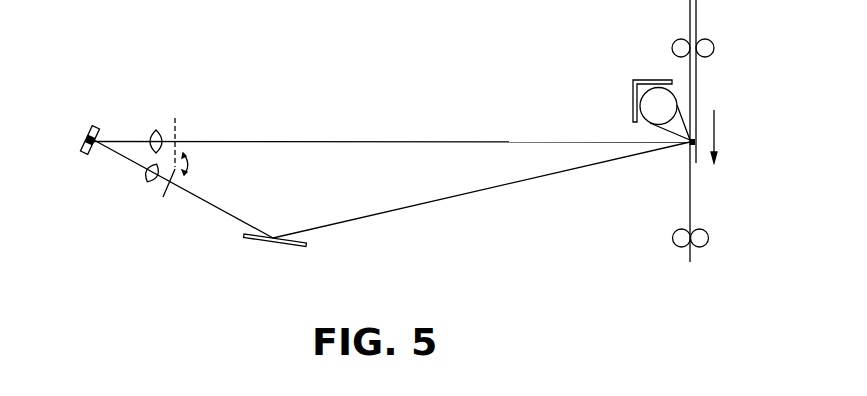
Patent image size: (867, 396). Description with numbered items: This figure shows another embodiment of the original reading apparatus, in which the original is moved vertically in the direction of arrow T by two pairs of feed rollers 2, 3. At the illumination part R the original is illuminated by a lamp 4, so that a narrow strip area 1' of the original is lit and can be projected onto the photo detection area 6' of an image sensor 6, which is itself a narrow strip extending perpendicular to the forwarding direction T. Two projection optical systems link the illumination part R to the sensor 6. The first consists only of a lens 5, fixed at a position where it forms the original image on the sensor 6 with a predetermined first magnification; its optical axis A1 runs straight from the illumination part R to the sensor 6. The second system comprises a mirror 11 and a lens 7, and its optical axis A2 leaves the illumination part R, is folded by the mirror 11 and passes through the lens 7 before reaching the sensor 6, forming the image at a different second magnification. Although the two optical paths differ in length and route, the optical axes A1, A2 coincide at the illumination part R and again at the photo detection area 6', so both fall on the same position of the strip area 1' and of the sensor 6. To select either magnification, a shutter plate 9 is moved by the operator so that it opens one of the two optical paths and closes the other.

The narrow strip area 1' is at (709, 131).
The feed rollers 2 is at (674, 42).
The feed rollers 3 is at (672, 238).
The lamp 4 is at (645, 105).
The lens 5 is at (153, 131).
The image sensor 6 is at (77, 154).
The photo detection area 6' is at (69, 132).
The lens 7 is at (146, 176).
The shutter plate 9 is at (173, 198).
The mirror 11 is at (290, 249).
The optical axis A1 is at (315, 141).
The optical axis A2 is at (442, 221).
The illumination part R is at (684, 153).
The original forwarding direction T is at (723, 136).